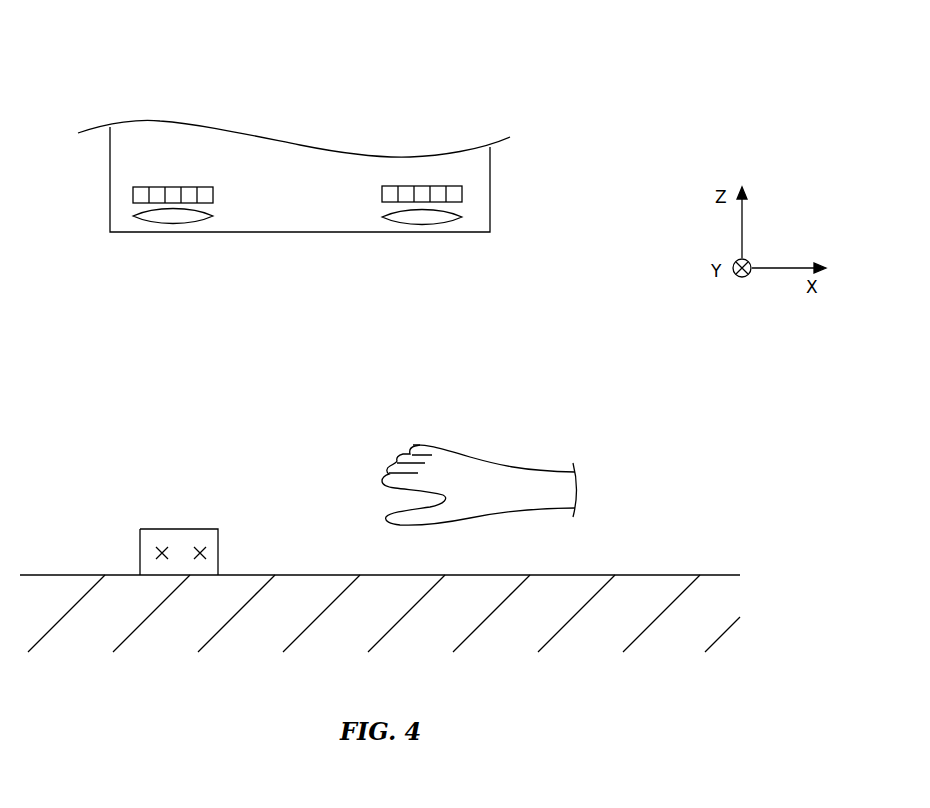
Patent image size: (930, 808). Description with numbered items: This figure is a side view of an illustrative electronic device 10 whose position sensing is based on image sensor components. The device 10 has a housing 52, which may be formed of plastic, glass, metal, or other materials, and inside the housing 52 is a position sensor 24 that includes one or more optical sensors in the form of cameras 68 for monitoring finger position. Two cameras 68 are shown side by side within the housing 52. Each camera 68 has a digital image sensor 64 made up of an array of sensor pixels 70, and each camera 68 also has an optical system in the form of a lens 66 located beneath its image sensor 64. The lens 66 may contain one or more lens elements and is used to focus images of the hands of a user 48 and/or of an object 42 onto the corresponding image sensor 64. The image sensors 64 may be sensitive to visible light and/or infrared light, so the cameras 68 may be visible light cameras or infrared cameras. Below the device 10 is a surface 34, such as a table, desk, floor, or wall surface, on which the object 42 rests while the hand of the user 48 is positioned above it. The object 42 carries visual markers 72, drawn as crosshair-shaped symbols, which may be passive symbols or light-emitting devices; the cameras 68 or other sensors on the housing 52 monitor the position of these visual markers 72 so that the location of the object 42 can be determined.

The electronic device 10 is at (418, 64).
The position sensor 24 is at (188, 161).
The surface 34 is at (653, 587).
The object 42 is at (185, 528).
The user 48 is at (508, 471).
The housing 52 is at (478, 200).
The digital image sensor 64 is at (153, 187).
The lens 66 is at (190, 228).
The camera 68 is at (228, 178).
The sensor pixels 70 is at (430, 185).
The visual markers 72 is at (156, 553).